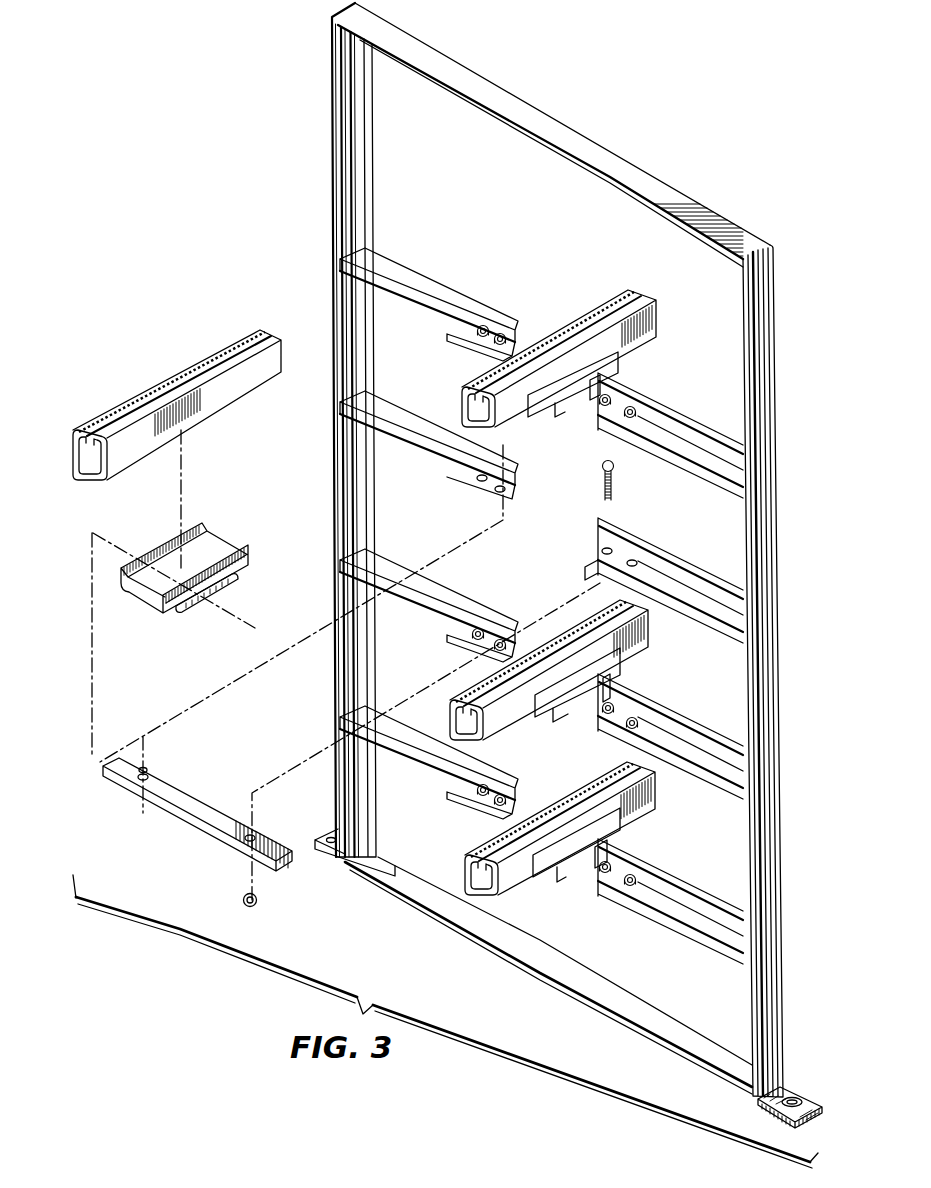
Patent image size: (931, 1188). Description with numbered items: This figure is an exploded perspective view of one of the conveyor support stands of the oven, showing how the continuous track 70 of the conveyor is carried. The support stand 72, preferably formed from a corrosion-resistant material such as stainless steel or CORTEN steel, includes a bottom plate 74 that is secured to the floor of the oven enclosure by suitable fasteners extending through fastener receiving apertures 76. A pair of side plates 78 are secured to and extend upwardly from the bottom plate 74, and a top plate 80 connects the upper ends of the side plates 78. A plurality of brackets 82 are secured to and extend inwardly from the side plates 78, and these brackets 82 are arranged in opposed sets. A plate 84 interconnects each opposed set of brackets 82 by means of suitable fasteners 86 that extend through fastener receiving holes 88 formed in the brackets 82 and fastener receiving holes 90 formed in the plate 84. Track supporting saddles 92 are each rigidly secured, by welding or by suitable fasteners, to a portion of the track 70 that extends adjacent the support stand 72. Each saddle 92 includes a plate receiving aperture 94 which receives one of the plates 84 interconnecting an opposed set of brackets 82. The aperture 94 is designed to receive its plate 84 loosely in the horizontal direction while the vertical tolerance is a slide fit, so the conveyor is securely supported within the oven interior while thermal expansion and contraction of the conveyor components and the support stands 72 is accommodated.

The continuous track 70 is at (170, 370).
The support stand 72 is at (779, 279).
The bottom plate 74 is at (560, 961).
The fastener receiving apertures 76 is at (333, 836).
The side plates 78 is at (332, 234).
The top plate 80 is at (519, 100).
The brackets 82 is at (416, 264).
The plate 84 is at (466, 358).
The fasteners 86 is at (608, 460).
The fastener receiving holes 88 is at (480, 484).
The fastener receiving holes 90 is at (146, 769).
The track supporting saddle 92 is at (247, 550).
The plate receiving aperture 94 is at (230, 592).